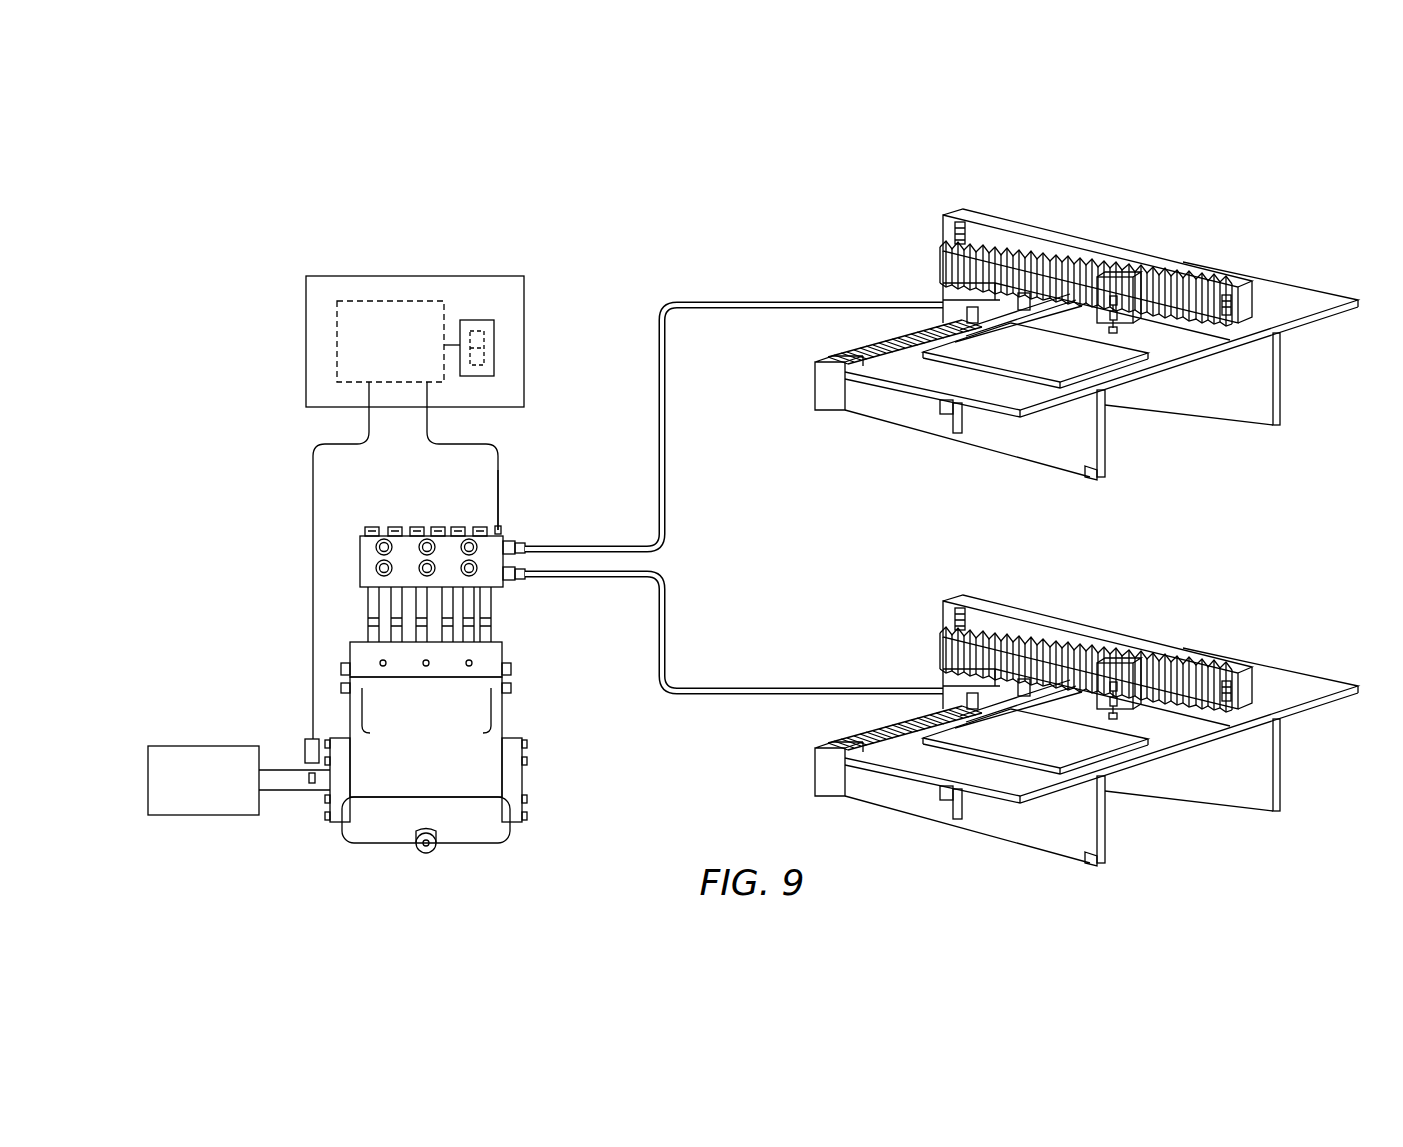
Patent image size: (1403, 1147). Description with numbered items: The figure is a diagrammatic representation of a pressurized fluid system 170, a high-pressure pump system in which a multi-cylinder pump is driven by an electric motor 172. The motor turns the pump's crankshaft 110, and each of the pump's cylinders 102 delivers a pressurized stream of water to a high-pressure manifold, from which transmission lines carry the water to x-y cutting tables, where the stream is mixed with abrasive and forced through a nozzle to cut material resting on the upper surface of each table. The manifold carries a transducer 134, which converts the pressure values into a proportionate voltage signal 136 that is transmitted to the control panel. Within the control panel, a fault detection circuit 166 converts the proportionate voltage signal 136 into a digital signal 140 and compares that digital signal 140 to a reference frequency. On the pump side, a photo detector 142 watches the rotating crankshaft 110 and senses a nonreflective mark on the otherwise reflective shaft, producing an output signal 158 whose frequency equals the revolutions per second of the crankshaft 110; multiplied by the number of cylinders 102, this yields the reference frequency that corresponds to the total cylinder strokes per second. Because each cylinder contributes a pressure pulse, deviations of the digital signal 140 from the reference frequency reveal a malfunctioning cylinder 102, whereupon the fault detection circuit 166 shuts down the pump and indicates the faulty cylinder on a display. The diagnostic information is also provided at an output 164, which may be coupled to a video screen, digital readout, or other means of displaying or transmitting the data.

The cylinders 102 is at (466, 522).
The crankshaft 110 is at (283, 786).
The transducer 134 is at (503, 535).
The voltage signal 136 is at (499, 478).
The digital signal 140 is at (312, 785).
The photo detector 142 is at (305, 745).
The output signal 158 is at (313, 630).
The output 164 is at (449, 345).
The fault detection circuit 166 is at (337, 331).
The pressurized fluid system 170 is at (656, 198).
The electric motor 172 is at (195, 746).